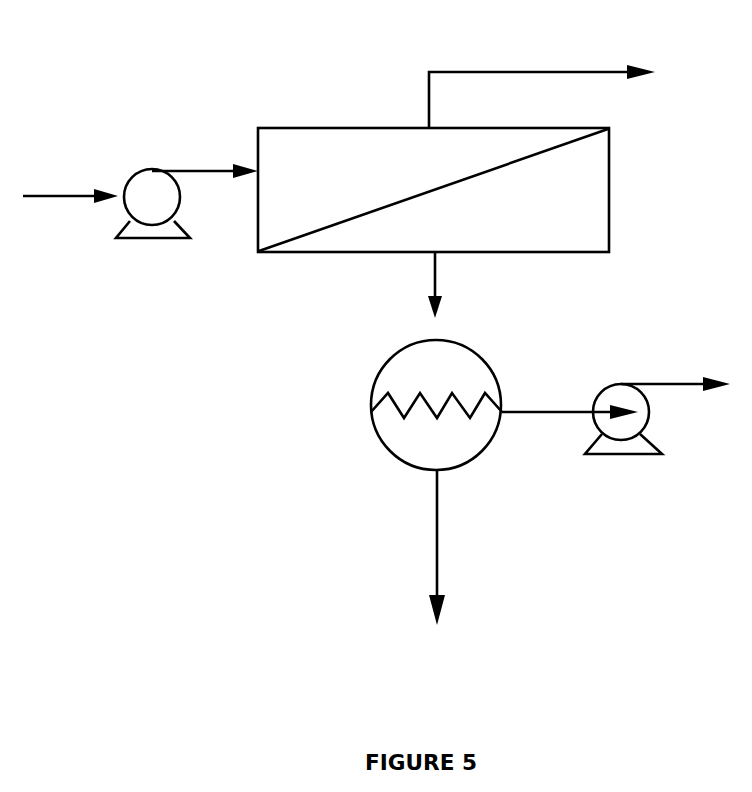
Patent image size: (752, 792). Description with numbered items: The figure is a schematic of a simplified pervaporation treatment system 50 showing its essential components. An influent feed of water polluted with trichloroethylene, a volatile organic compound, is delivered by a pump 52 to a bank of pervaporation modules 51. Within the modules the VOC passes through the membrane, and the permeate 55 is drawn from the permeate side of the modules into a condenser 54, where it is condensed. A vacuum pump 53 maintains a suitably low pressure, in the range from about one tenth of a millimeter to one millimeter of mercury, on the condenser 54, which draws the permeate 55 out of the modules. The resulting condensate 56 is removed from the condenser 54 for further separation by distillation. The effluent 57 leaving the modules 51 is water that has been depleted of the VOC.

The pervaporation system 50 is at (296, 293).
The bank of pervaporation modules 51 is at (335, 127).
The pump 52 is at (141, 240).
The vacuum pump 53 is at (600, 392).
The condenser 54 is at (391, 455).
The permeate 55 is at (427, 267).
The condensate 56 is at (440, 586).
The effluent 57 is at (539, 70).